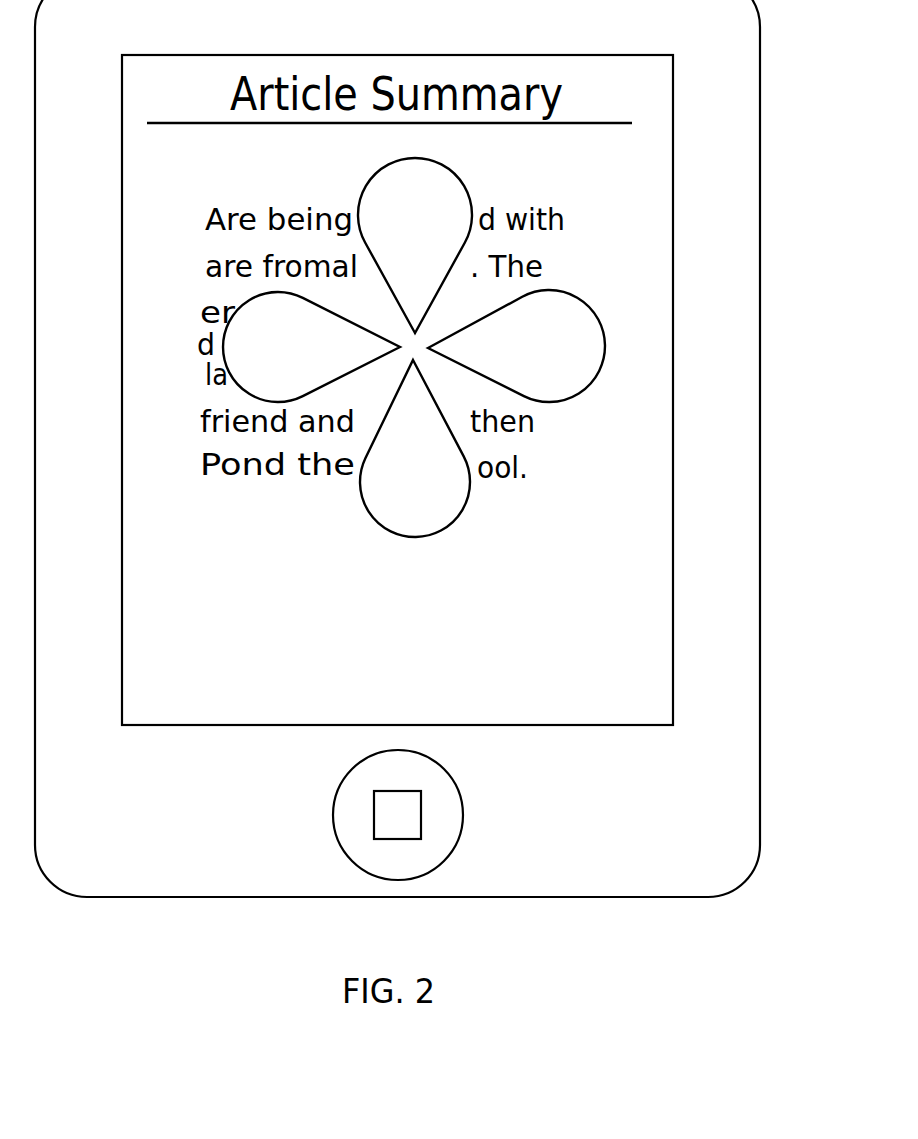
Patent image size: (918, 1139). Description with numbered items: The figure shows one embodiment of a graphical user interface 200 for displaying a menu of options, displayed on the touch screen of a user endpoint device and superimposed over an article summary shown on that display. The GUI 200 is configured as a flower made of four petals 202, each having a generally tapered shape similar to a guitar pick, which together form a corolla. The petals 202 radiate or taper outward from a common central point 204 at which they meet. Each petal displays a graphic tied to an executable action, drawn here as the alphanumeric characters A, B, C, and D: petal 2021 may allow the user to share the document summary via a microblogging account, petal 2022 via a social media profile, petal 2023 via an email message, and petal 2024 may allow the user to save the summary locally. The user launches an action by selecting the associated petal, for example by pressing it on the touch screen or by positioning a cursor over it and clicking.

The graphical user interface 200 is at (524, 347).
The petals 202 is at (414, 347).
The petal 2021 is at (440, 291).
The petal 2022 is at (517, 361).
The petal 2023 is at (442, 422).
The petal 2024 is at (370, 362).
The common central point 204 is at (412, 348).